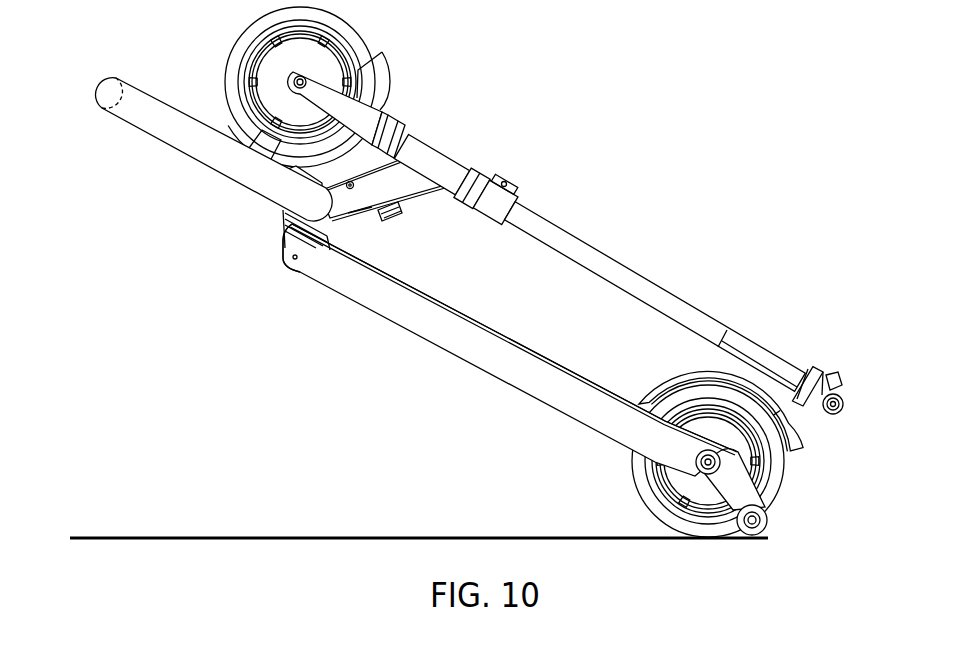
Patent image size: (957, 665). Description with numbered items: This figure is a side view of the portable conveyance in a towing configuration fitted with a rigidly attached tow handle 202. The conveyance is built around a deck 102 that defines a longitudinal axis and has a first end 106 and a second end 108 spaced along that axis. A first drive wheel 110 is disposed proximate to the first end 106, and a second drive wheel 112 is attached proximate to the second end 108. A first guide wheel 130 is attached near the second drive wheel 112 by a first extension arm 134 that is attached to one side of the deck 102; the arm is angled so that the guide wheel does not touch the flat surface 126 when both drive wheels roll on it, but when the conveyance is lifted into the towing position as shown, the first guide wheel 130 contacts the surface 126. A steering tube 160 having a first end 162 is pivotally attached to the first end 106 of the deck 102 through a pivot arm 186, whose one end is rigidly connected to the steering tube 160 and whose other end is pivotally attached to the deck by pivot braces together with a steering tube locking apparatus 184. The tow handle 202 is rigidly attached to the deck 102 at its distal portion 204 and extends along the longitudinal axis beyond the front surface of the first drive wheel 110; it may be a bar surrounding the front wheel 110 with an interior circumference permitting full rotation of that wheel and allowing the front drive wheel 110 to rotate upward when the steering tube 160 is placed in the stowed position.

The deck 102 is at (430, 335).
The first end 106 is at (290, 248).
The second end 108 is at (633, 405).
The first drive wheel 110 is at (240, 46).
The second drive wheel 112 is at (633, 483).
The flat surface 126 is at (291, 542).
The first guide wheel 130 is at (767, 517).
The first extension arm 134 is at (736, 502).
The steering tube 160 is at (627, 274).
The first end 162 is at (403, 118).
The steering tube locking apparatus 184 is at (360, 213).
The pivot arm 186 is at (420, 185).
The tow handle 202 is at (107, 101).
The distal portion 204 is at (310, 213).